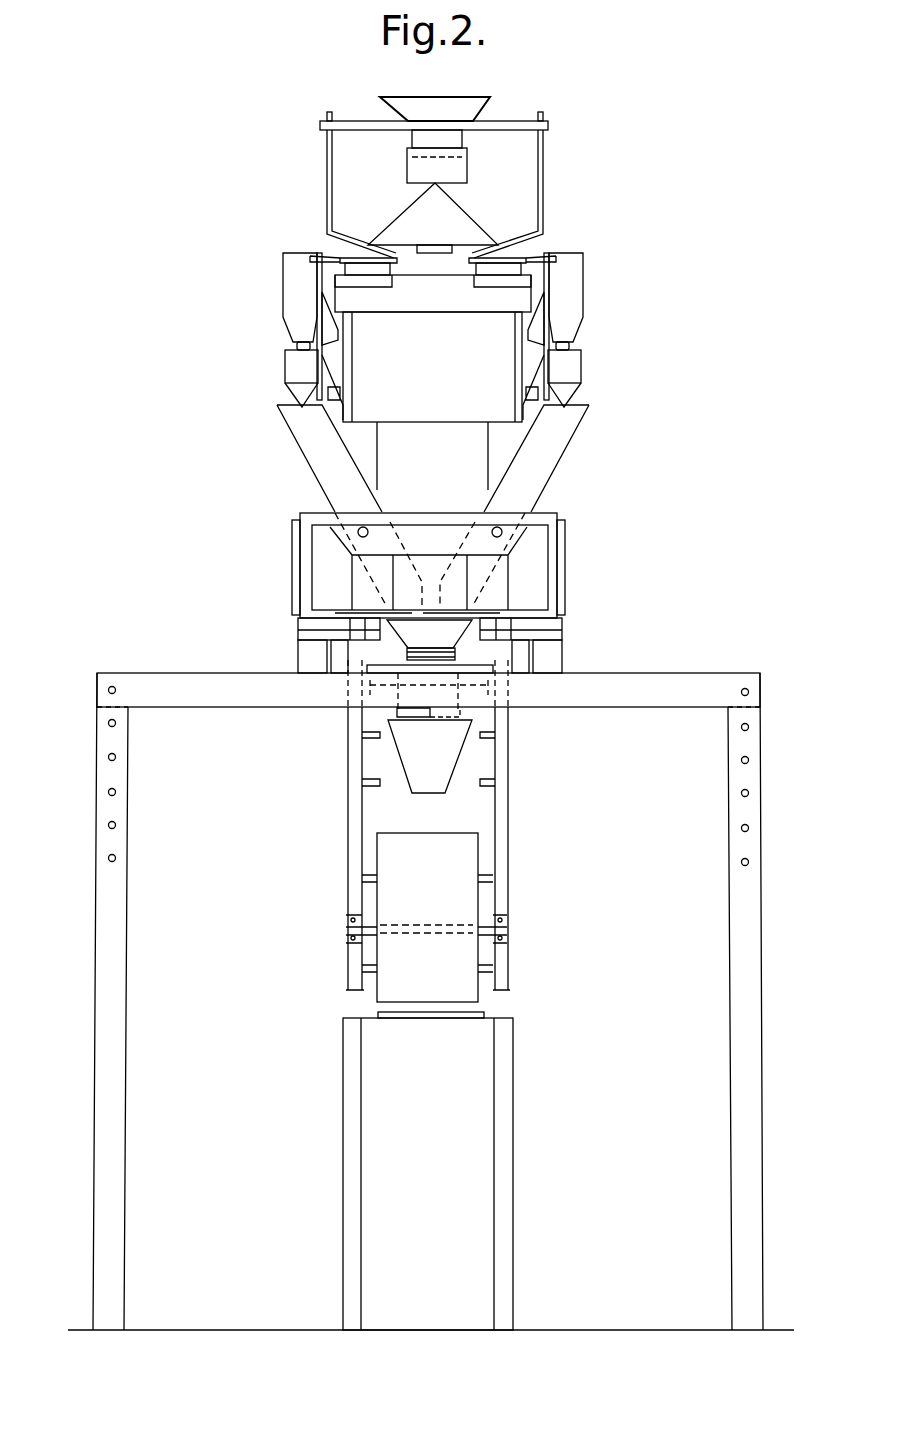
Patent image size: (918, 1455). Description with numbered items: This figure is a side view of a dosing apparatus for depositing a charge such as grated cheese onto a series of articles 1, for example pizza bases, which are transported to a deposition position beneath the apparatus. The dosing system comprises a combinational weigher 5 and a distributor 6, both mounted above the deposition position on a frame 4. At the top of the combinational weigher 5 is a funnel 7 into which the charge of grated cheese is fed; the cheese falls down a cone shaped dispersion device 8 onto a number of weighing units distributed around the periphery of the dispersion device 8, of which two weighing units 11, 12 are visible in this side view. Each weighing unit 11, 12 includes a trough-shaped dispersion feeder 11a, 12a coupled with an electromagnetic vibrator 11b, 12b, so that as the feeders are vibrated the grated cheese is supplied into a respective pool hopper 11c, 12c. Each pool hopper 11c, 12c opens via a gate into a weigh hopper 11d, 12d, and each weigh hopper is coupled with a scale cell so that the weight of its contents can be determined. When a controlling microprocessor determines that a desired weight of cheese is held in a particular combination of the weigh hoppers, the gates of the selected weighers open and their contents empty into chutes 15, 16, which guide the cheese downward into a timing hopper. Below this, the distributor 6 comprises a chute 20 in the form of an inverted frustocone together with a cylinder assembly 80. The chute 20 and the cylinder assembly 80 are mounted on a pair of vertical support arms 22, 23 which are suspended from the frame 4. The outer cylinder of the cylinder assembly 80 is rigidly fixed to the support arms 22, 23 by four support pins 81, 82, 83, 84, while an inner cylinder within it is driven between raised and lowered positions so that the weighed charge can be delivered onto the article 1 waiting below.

The article 1 is at (484, 1013).
The frame 4 is at (661, 675).
The combinational weigher 5 is at (257, 293).
The distributor 6 is at (540, 873).
The funnel 7 is at (385, 97).
The cone shaped dispersion device 8 is at (395, 218).
The weighing unit 11 is at (318, 232).
The trough-shaped dispersion feeder 11a is at (310, 242).
The electromagnetic vibrator 11b is at (357, 277).
The pool hopper 11c is at (288, 305).
The weigh hopper 11d is at (290, 370).
The weighing unit 12 is at (548, 232).
The trough-shaped dispersion feeder 12a is at (548, 252).
The electromagnetic vibrator 12b is at (510, 277).
The pool hopper 12c is at (568, 307).
The weigh hopper 12d is at (566, 372).
The chute 15 is at (300, 455).
The chute 16 is at (568, 458).
The chute 20 is at (447, 752).
The vertical support arm 22 is at (348, 825).
The vertical support arm 23 is at (510, 775).
The cylinder assembly 80 is at (488, 840).
The support pin 81 is at (365, 870).
The support pin 82 is at (490, 908).
The support pin 83 is at (360, 947).
The support pin 84 is at (498, 975).